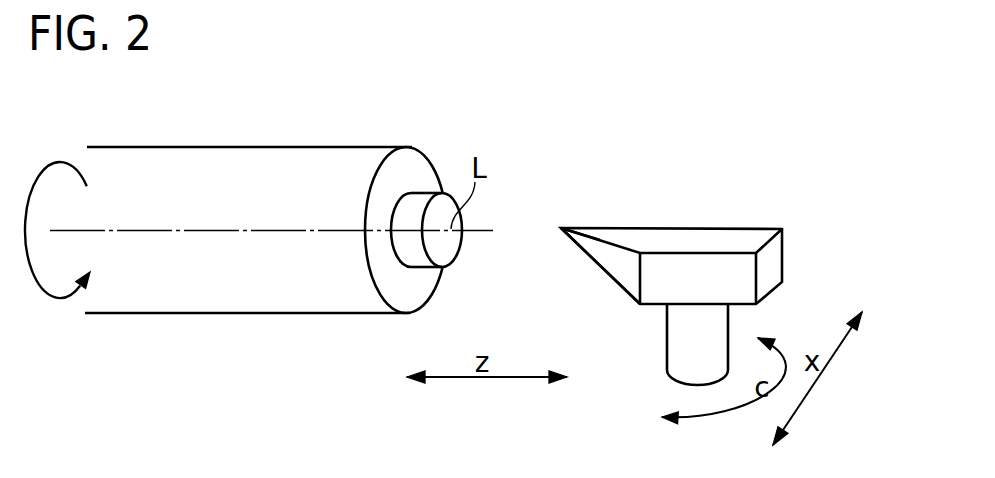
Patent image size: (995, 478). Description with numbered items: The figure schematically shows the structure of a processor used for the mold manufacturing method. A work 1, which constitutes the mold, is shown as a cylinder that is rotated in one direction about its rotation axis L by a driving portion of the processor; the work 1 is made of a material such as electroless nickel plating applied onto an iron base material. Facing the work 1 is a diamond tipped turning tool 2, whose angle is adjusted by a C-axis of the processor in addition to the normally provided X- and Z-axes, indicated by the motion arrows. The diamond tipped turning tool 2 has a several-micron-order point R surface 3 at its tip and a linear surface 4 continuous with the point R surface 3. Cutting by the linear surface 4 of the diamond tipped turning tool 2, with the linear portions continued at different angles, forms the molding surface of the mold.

The work 1 is at (284, 157).
The diamond tipped turning tool 2 is at (675, 234).
The point R surface 3 is at (561, 228).
The linear surface 4 is at (612, 262).